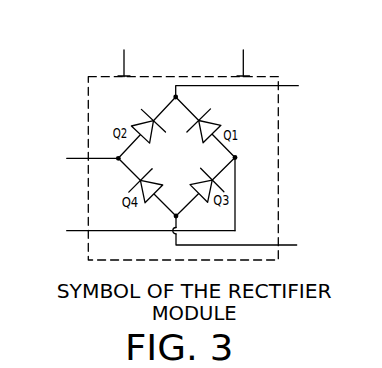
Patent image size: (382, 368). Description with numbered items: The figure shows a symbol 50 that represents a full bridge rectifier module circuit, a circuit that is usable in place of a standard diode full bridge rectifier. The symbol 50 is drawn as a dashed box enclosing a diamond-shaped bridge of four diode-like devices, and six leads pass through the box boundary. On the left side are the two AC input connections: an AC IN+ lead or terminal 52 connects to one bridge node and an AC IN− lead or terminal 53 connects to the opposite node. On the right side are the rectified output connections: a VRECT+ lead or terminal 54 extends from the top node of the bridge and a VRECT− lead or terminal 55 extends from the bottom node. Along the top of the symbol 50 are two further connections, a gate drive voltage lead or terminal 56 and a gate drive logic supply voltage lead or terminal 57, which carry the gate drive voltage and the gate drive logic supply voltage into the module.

The symbol 50 is at (63, 70).
The AC IN+ lead or terminal 52 is at (76, 160).
The AC IN− lead or terminal 53 is at (76, 228).
The VRECT+ lead or terminal 54 is at (292, 88).
The VRECT− lead or terminal 55 is at (292, 243).
The gate drive voltage lead or terminal 56 is at (122, 63).
The gate drive logic supply voltage lead or terminal 57 is at (242, 63).